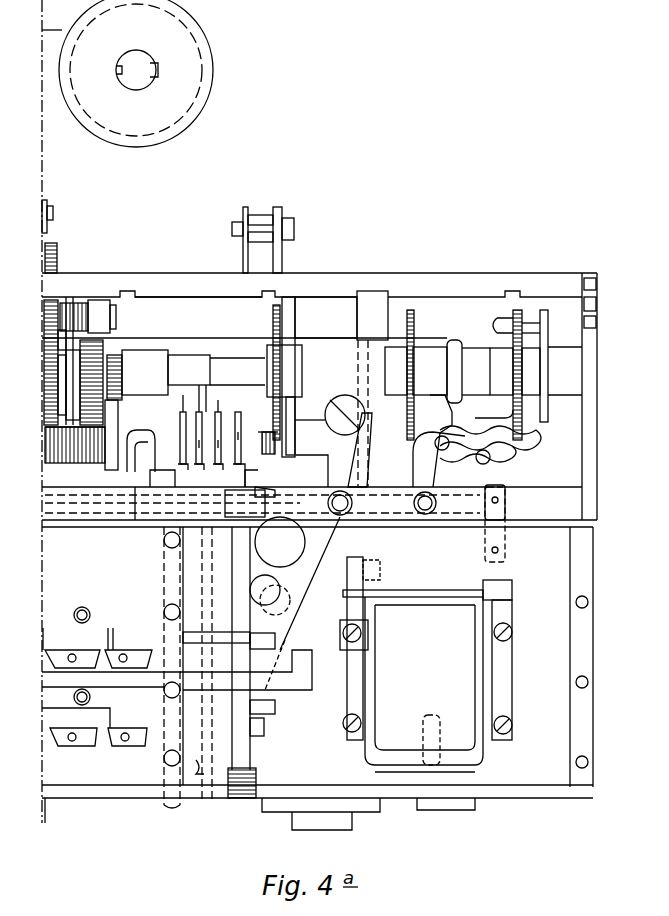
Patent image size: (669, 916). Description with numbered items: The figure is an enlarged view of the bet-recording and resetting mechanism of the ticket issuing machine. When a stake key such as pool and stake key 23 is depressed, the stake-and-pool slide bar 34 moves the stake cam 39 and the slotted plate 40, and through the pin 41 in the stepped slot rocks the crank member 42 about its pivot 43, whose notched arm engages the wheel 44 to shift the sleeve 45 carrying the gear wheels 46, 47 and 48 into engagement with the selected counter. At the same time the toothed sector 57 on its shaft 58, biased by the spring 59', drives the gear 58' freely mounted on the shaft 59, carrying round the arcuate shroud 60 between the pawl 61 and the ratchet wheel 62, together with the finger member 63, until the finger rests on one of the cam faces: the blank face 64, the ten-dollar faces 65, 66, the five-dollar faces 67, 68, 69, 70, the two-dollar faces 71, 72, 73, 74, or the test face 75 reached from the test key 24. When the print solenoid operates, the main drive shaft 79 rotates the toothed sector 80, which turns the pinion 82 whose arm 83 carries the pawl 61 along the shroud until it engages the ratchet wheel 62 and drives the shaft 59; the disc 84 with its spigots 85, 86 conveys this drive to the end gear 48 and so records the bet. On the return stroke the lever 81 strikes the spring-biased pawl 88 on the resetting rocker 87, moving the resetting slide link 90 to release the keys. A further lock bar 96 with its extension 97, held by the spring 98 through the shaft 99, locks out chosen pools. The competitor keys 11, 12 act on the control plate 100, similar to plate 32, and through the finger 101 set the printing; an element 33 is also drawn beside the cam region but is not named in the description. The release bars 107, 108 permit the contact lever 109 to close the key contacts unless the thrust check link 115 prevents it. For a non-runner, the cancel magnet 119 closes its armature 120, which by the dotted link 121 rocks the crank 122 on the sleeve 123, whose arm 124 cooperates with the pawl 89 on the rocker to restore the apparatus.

The competitor key 11 is at (73, 744).
The competitor key 12 is at (127, 744).
The pool and stake key 23 is at (71, 648).
The test key 24 is at (128, 648).
The control plate 32 is at (193, 632).
The cam 33 is at (290, 572).
The stake-and-pool slide bar 34 is at (70, 510).
The stake cam 39 is at (254, 476).
The slotted plate 40 is at (534, 440).
The pin 41 is at (496, 460).
The crank member 42 is at (416, 424).
The pivot 43 is at (439, 459).
The wheel 44 is at (461, 352).
The sleeve 45 is at (375, 358).
The gear wheel 46 is at (278, 305).
The gear wheel 47 is at (411, 310).
The end gear wheel 48 is at (517, 310).
The toothed sector 57 is at (110, 455).
The shaft 58 is at (75, 452).
The gear 58' is at (131, 354).
The shaft 59 is at (193, 366).
The spring 59' is at (56, 432).
The arcuate shroud 60 is at (72, 385).
The pawl 61 is at (92, 305).
The ratchet wheel 62 is at (83, 382).
The finger member 63 is at (220, 408).
The cam face 64 is at (201, 412).
The cam face 65 is at (185, 404).
The cam face 66 is at (231, 408).
The cam face 67 is at (151, 451).
The cam face 68 is at (197, 440).
The cam face 69 is at (213, 440).
The cam face 70 is at (232, 437).
The cam face 71 is at (178, 446).
The cam face 72 is at (196, 446).
The cam face 73 is at (216, 446).
The cam face 74 is at (236, 449).
The cam face 75 is at (157, 477).
The main drive shaft 79 is at (204, 303).
The toothed sector 80 is at (47, 318).
The lever 81 is at (291, 320).
The pinion 82 is at (58, 370).
The arm 83 is at (58, 338).
The disc 84 is at (560, 343).
The spigot 85 is at (532, 332).
The spigot 86 is at (493, 408).
The resetting rocker 87 is at (338, 458).
The spring-biased pawl 88 is at (274, 453).
The spring-biased pawl 89 is at (296, 440).
The resetting slide link 90 is at (45, 510).
The lock bar 96 is at (116, 678).
The extension 97 is at (305, 672).
The spring 98 is at (252, 778).
The shaft 99 is at (244, 748).
The control plate 100 is at (197, 663).
The finger 101 is at (300, 585).
The release bar 107 is at (164, 768).
The release bar 108 is at (195, 762).
The contact lever 109 is at (276, 492).
The thrust check link 115 is at (240, 503).
The cancel magnet 119 is at (460, 655).
The armature 120 is at (420, 596).
The link 121 is at (356, 546).
The crank 122 is at (364, 305).
The sleeve 123 is at (340, 305).
The arm 124 is at (296, 318).